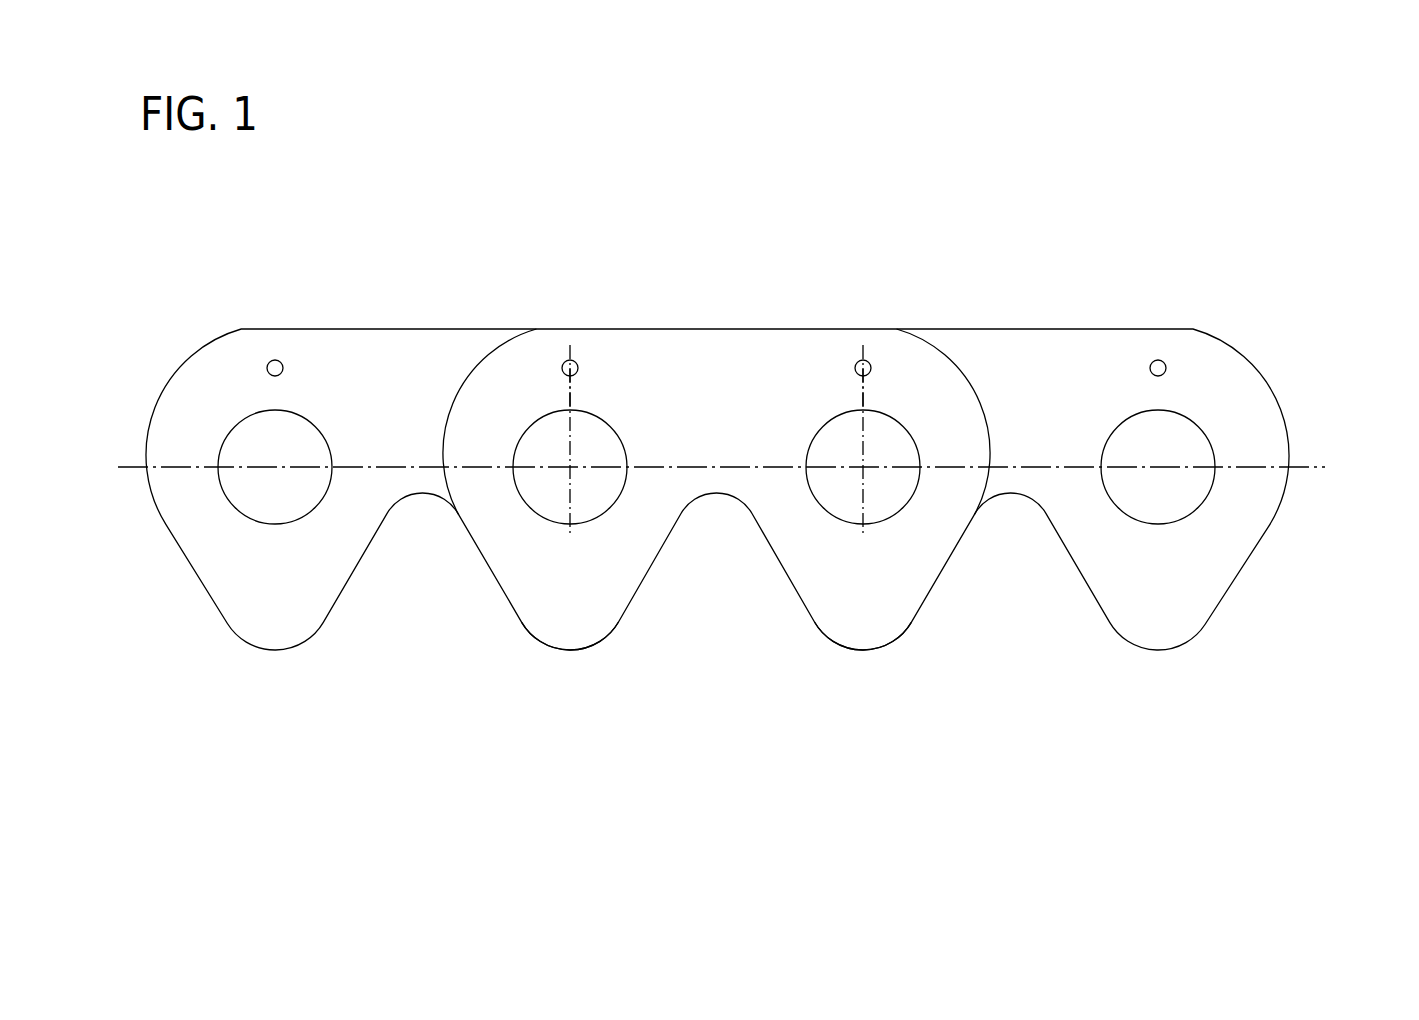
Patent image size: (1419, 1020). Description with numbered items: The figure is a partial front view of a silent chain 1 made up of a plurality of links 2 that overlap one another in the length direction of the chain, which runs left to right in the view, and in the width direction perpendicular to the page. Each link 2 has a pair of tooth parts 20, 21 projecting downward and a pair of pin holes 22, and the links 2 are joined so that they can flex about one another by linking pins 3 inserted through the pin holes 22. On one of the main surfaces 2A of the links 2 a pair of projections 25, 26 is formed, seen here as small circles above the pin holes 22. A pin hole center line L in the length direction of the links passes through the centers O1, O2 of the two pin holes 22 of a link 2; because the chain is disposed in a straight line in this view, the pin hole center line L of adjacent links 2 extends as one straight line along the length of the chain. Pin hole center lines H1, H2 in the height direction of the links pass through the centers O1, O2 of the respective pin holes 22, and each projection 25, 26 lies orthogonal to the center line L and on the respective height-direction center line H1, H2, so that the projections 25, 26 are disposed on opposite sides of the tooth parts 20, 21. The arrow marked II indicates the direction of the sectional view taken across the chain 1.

The silent chain 1 is at (828, 248).
The link 2 is at (373, 328).
The main surface 2A is at (467, 344).
The linking pin 3 is at (611, 437).
The tooth part 20 is at (570, 640).
The tooth part 21 is at (861, 640).
The pin hole 22 is at (527, 496).
The projection 25 is at (563, 363).
The projection 26 is at (870, 362).
The pin hole center line in the height direction H1 is at (568, 407).
The pin hole center line in the height direction H2 is at (866, 407).
The center of the pin hole O1 is at (590, 441).
The center of the pin hole O2 is at (844, 441).
The pin hole center line L is at (1302, 467).
The section line II- II is at (1345, 473).